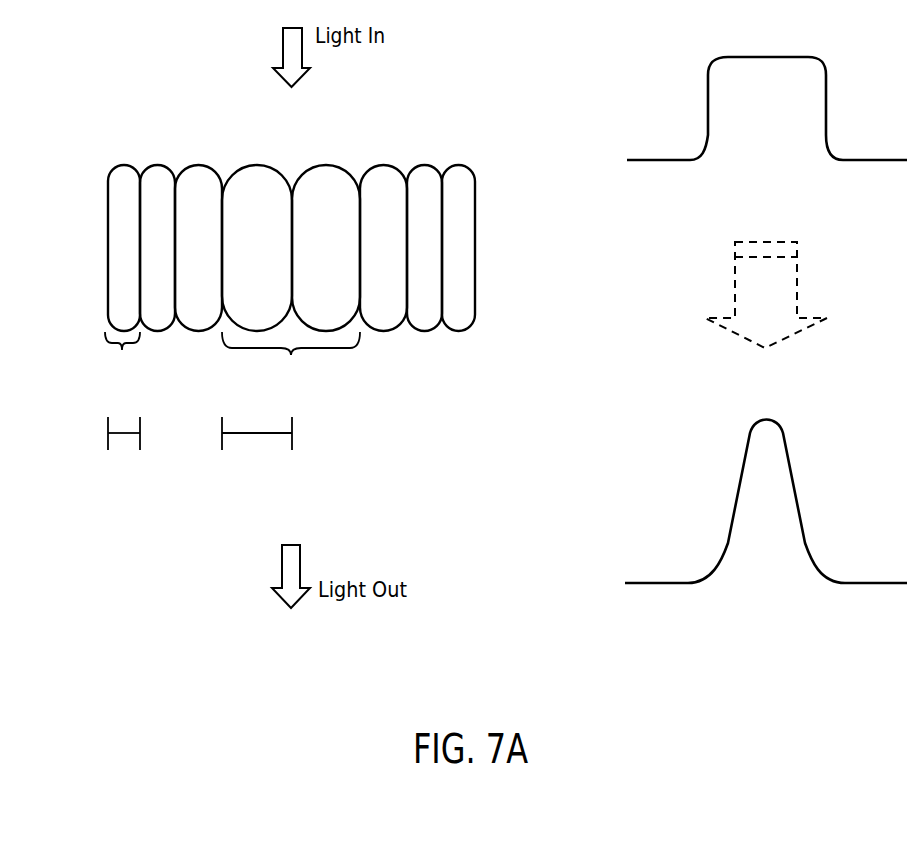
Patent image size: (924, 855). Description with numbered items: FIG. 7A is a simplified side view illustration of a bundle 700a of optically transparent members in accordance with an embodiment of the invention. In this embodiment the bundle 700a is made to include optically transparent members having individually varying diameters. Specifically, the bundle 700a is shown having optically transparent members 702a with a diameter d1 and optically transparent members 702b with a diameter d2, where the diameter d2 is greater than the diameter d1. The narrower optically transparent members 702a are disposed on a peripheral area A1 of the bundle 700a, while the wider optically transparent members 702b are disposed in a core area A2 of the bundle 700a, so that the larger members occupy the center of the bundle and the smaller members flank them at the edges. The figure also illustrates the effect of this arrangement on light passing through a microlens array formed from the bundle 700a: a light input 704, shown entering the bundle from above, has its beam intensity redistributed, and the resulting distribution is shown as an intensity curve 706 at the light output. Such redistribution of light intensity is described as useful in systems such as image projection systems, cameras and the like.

The bundle 700a is at (310, 199).
The optically transparent members 702a is at (126, 165).
The optically transparent members 702b is at (266, 165).
The light input 704 is at (826, 88).
The intensity curve 706 is at (790, 472).
The peripheral area A1 is at (122, 357).
The core area A2 is at (291, 363).
The diameter d1 is at (125, 433).
The diameter d2 is at (256, 433).